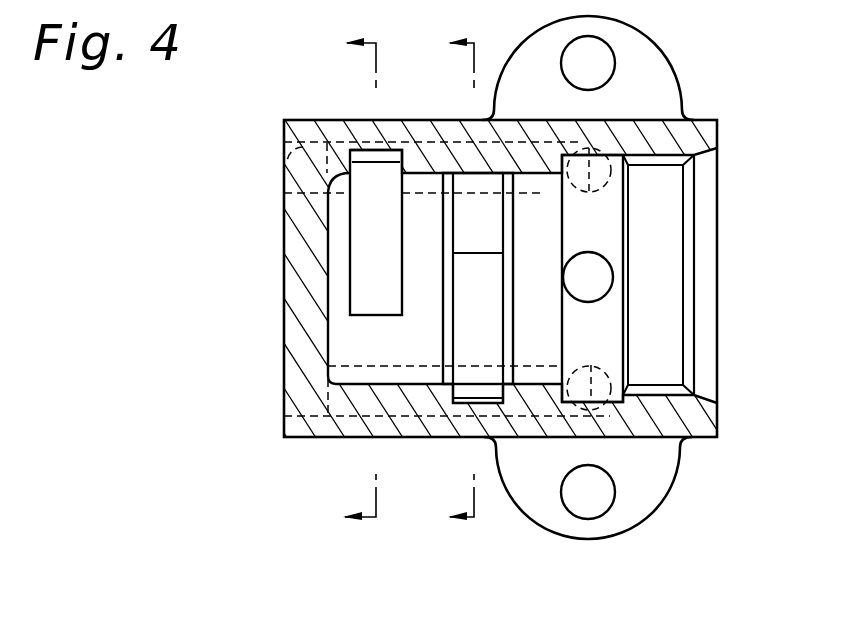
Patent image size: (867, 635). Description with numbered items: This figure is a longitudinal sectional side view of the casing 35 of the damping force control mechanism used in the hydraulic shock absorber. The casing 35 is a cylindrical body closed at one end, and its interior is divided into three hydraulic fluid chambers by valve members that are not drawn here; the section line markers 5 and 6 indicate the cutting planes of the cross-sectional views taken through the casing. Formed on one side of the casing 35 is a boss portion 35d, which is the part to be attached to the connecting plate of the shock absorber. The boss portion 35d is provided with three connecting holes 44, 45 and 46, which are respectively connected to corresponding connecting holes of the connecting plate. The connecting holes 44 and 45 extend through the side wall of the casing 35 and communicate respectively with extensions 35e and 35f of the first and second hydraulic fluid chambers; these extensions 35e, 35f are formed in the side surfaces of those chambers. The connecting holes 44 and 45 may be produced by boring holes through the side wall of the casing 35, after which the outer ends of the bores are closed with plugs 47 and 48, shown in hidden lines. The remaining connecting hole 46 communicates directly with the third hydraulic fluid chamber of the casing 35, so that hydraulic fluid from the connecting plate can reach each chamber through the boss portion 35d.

The casing 35 is at (318, 126).
The boss portion 35d is at (647, 57).
The extension of hydraulic fluid chamber 35e is at (365, 212).
The extension of hydraulic fluid chamber 35f is at (468, 372).
The connecting hole 44 is at (606, 149).
The connecting hole 45 is at (603, 410).
The connecting hole 46 is at (610, 282).
The plug 47 is at (290, 166).
The plug 48 is at (300, 398).
The section line 5- 5 is at (353, 263).
The section line 6- 6 is at (457, 263).